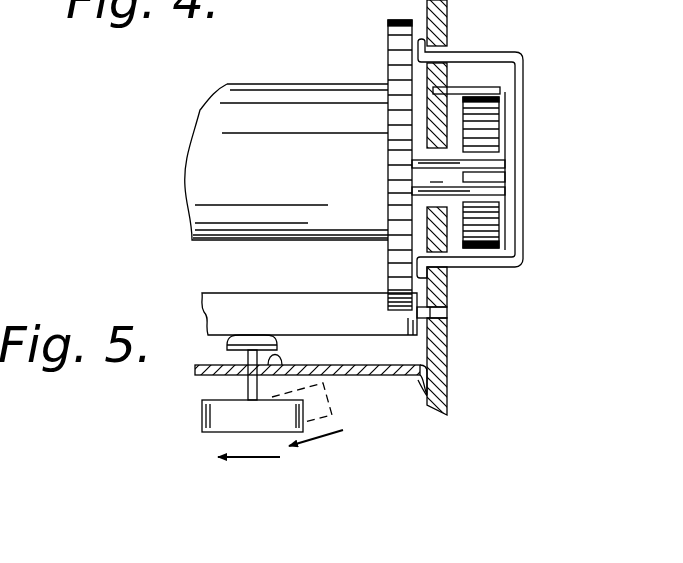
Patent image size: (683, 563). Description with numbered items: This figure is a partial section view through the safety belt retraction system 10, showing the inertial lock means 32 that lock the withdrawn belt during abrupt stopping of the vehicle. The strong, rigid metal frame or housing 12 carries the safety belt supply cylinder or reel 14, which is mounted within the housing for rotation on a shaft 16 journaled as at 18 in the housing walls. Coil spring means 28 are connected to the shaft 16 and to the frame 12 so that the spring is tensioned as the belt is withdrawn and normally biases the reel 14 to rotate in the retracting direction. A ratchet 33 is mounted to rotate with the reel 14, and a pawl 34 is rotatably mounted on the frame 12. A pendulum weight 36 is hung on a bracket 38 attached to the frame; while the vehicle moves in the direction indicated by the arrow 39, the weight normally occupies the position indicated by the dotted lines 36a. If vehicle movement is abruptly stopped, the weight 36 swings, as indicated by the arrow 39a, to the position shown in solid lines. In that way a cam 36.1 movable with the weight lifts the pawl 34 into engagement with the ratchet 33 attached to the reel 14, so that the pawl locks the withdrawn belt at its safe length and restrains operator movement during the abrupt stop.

The safety belt retraction system 10 is at (513, 38).
The frame or housing 12 is at (447, 12).
The safety belt supply cylinder or reel 14 is at (321, 72).
The shaft 16 is at (427, 171).
The journal 18 is at (453, 138).
The coil spring means 28 is at (490, 218).
The ratchet 33 is at (397, 193).
The inertial lock means 32 is at (201, 386).
The pawl 34 is at (362, 354).
The pendulum weight 36 is at (202, 405).
The cam 36.1 is at (270, 334).
The dotted-line position of pendulum weight 36a is at (322, 406).
The bracket 38 is at (419, 393).
The arrow indicating vehicle movement direction 39 is at (253, 458).
The arrow indicating weight swing 39a is at (315, 435).